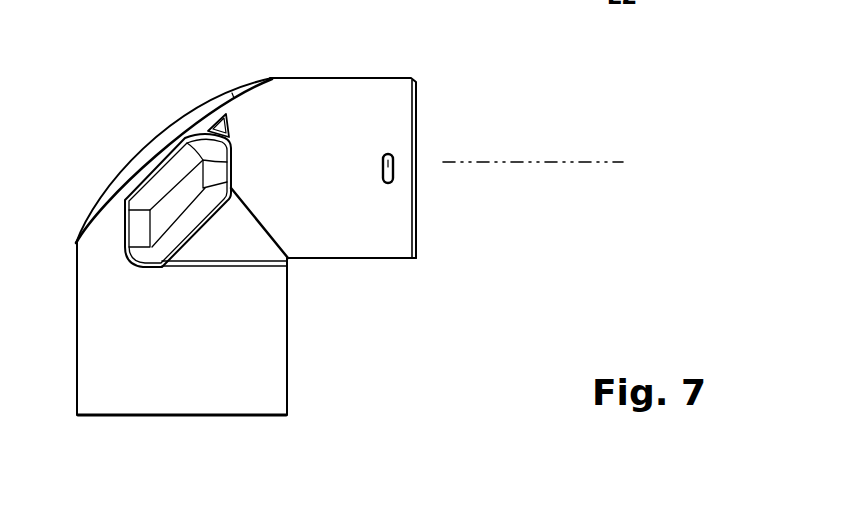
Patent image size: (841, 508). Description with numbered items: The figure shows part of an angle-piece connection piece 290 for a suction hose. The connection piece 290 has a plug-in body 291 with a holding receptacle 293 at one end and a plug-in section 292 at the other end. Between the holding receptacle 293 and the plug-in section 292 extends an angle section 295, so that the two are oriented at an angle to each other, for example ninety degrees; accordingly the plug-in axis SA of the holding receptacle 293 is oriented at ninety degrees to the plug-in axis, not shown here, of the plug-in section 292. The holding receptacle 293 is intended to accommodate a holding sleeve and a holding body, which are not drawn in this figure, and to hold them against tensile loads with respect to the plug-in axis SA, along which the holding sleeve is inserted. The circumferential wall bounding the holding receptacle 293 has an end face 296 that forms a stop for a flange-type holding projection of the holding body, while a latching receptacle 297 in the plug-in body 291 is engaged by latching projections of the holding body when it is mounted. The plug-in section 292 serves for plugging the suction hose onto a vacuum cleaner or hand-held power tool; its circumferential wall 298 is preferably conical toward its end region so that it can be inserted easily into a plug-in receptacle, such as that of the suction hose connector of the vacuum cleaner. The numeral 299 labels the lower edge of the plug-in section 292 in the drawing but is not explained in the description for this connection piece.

The connection piece 290 is at (199, 90).
The plug-in body 291 is at (327, 92).
The plug-in section 292 is at (207, 383).
The holding receptacle 293 is at (418, 242).
The angle section 295 is at (131, 156).
The end face 296 is at (416, 92).
The latching receptacle 297 is at (393, 163).
The circumferential wall 298 is at (85, 333).
The bottom edge 299 is at (242, 415).
The plug-in axis SA is at (592, 163).